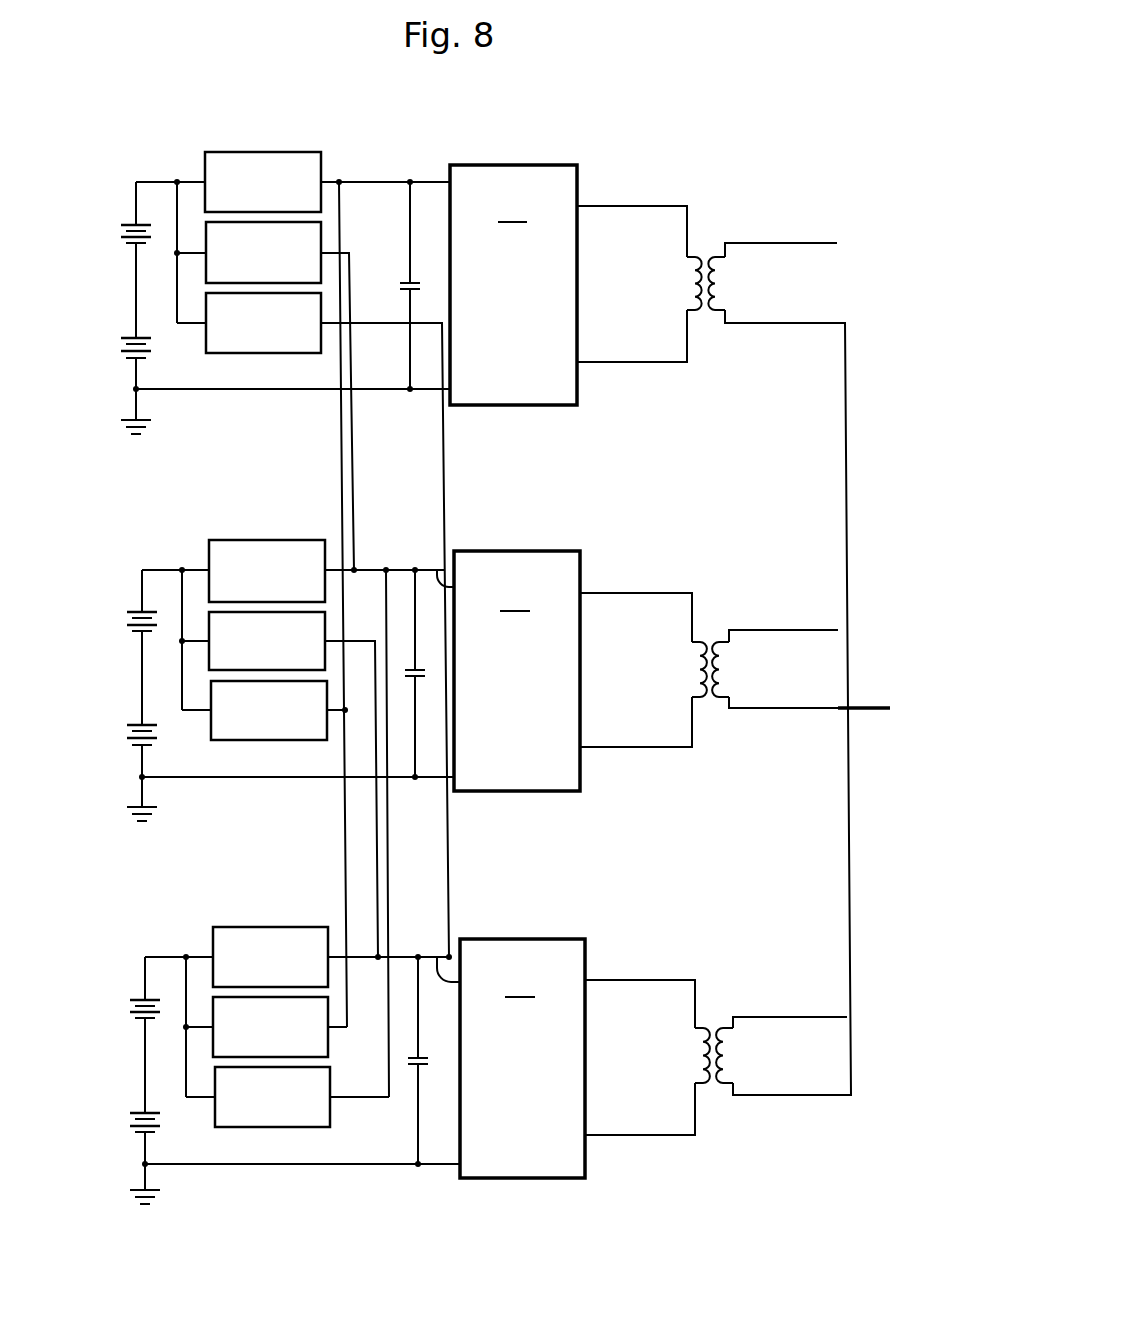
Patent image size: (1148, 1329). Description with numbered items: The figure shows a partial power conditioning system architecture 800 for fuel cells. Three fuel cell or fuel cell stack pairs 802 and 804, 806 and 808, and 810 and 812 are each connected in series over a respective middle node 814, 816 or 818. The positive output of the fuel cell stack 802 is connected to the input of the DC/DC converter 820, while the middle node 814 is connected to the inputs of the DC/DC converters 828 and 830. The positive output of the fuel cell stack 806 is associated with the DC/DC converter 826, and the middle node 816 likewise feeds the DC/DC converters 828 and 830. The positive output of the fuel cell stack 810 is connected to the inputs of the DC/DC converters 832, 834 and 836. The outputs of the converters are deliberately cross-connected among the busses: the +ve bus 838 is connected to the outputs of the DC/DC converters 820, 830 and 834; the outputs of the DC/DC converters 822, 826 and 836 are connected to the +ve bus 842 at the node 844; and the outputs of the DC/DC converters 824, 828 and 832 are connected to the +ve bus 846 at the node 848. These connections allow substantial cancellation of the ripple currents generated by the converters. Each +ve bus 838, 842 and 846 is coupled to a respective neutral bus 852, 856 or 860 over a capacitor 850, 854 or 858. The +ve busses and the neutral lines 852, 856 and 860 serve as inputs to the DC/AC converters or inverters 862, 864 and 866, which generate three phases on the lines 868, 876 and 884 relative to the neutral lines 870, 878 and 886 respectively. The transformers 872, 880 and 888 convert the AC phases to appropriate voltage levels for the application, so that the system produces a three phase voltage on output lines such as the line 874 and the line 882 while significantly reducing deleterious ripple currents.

The power conditioning system architecture 800 is at (792, 133).
The fuel cell or fuel cell stack 802 is at (116, 217).
The fuel cell or fuel cell stack 804 is at (116, 331).
The fuel cell or fuel cell stack 806 is at (118, 603).
The fuel cell or fuel cell stack 808 is at (118, 718).
The fuel cell or fuel cell stack 810 is at (121, 993).
The fuel cell or fuel cell stack 812 is at (121, 1106).
The middle node 814 is at (136, 270).
The middle node 816 is at (142, 660).
The middle node 818 is at (145, 1048).
The DC/DC converter 820 is at (261, 152).
The DC/DC converter 822 is at (206, 268).
The DC/DC converter 824 is at (260, 353).
The DC/DC converter 826 is at (265, 540).
The DC/DC converter 828 is at (209, 657).
The DC/DC converter 830 is at (265, 740).
The DC/DC converter 832 is at (270, 927).
The DC/DC converter 834 is at (328, 1041).
The DC/DC converter 836 is at (330, 1110).
The +ve bus 838 is at (357, 181).
The +ve bus 842 is at (449, 587).
The node 844 is at (371, 568).
The +ve bus 846 is at (445, 478).
The node 848 is at (451, 982).
The capacitor 850 is at (417, 280).
The neutral bus 852 is at (422, 680).
The capacitor 854 is at (431, 393).
The neutral bus 856 is at (433, 780).
The capacitor 858 is at (427, 1055).
The neutral bus 860 is at (443, 1166).
The DC/AC converter 862 is at (513, 285).
The DC/AC converter 864 is at (517, 671).
The DC/AC converter 866 is at (522, 1058).
The phase line 868 is at (673, 205).
The neutral line 870 is at (658, 365).
The transformer 872 is at (718, 225).
The phase output line 874 is at (799, 246).
The phase line 876 is at (678, 592).
The neutral line 878 is at (663, 750).
The transformer 880 is at (716, 612).
The phase output line 882 is at (801, 632).
The phase line 884 is at (802, 710).
The neutral line 886 is at (682, 980).
The transformer 888 is at (668, 1137).